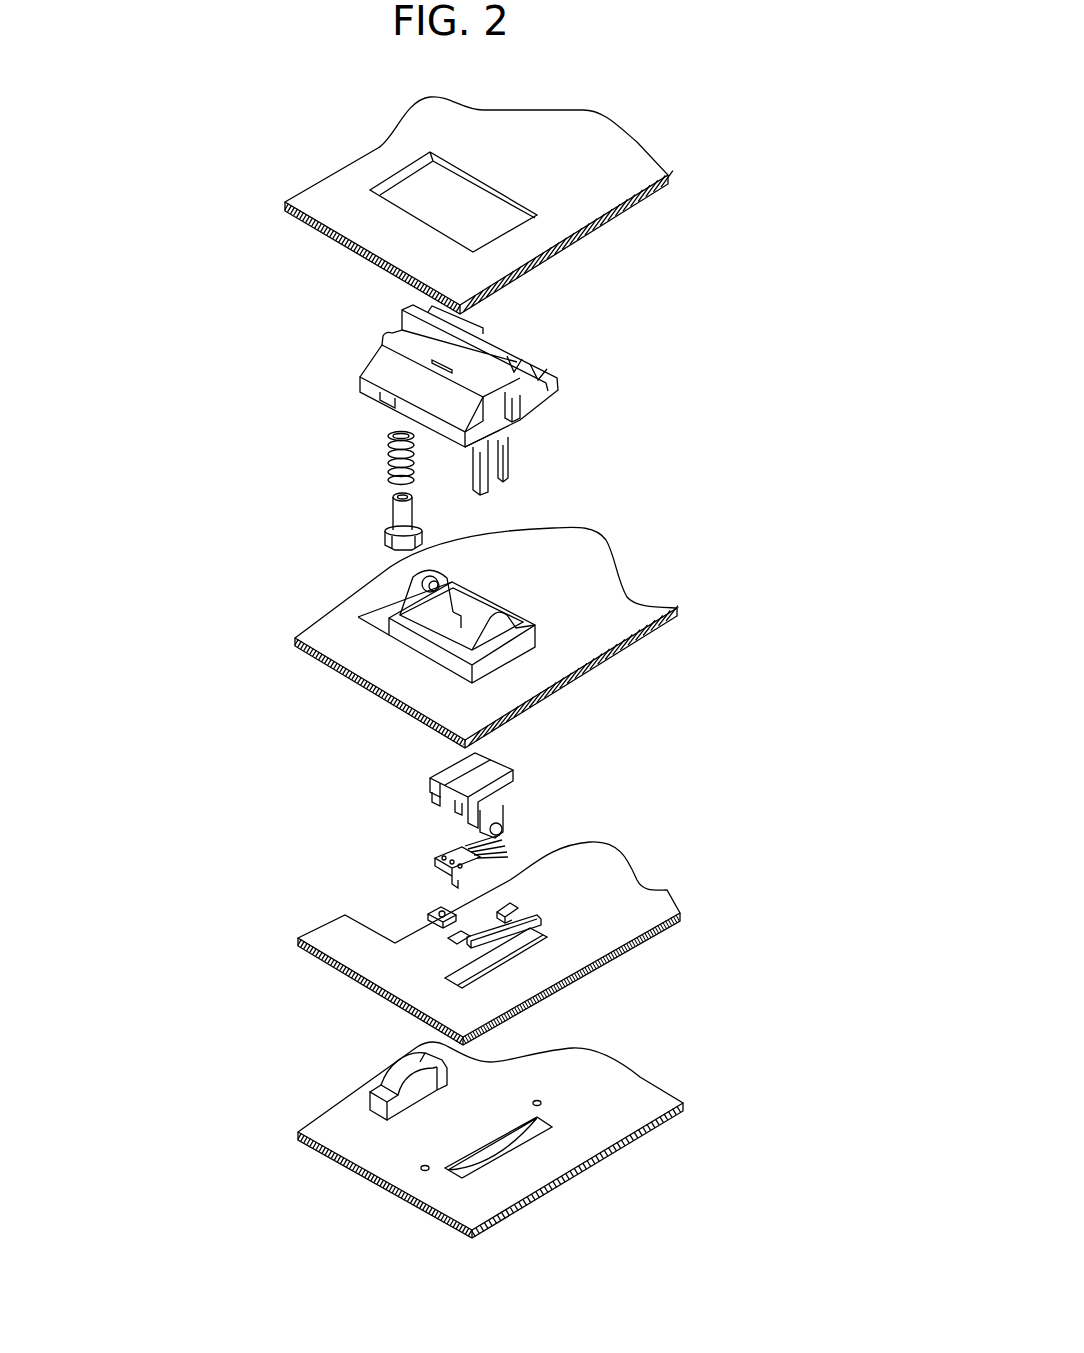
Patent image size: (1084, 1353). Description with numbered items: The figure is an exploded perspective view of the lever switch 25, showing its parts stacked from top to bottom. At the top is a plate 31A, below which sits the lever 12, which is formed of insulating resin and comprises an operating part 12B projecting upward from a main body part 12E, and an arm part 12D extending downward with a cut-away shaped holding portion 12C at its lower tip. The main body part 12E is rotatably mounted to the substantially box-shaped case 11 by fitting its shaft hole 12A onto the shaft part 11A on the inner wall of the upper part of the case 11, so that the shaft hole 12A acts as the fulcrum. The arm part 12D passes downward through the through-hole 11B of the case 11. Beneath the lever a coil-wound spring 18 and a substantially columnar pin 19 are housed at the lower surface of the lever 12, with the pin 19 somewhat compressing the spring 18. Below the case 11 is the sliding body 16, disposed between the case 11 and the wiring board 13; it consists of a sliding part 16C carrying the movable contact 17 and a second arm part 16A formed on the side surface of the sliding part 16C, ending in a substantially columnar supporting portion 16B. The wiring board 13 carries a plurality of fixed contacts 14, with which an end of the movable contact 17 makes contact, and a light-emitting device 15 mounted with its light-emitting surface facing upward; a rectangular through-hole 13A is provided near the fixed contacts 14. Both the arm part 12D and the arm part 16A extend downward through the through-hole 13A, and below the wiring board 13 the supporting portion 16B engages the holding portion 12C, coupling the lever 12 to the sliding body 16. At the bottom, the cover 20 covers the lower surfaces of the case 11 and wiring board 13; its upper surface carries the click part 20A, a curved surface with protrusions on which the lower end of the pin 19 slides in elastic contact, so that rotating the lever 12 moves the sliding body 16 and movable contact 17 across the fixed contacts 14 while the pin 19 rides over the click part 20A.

The lever switch 25 is at (782, 123).
The cover plate 31A is at (637, 142).
The lever 12 is at (451, 390).
The shaft hole 12A is at (515, 408).
The operating part 12B is at (498, 358).
The holding portion 12C is at (508, 473).
The arm part 12D is at (493, 453).
The main body part 12E is at (400, 382).
The spring 18 is at (388, 457).
The pin 19 is at (382, 530).
The case 11 is at (475, 606).
The shaft part 11A is at (433, 582).
The through-hole 11B is at (475, 625).
The sliding body 16 is at (487, 764).
The arm part 16A is at (502, 812).
The supporting portion 16B is at (505, 830).
The sliding part 16C is at (462, 768).
The movable contact 17 is at (447, 858).
The light-emitting device 15 is at (433, 915).
The fixed contact 14 is at (525, 921).
The wiring board 13 is at (525, 931).
The through-hole 13A is at (523, 947).
The cover 20 is at (494, 1125).
The click part 20A is at (405, 1093).